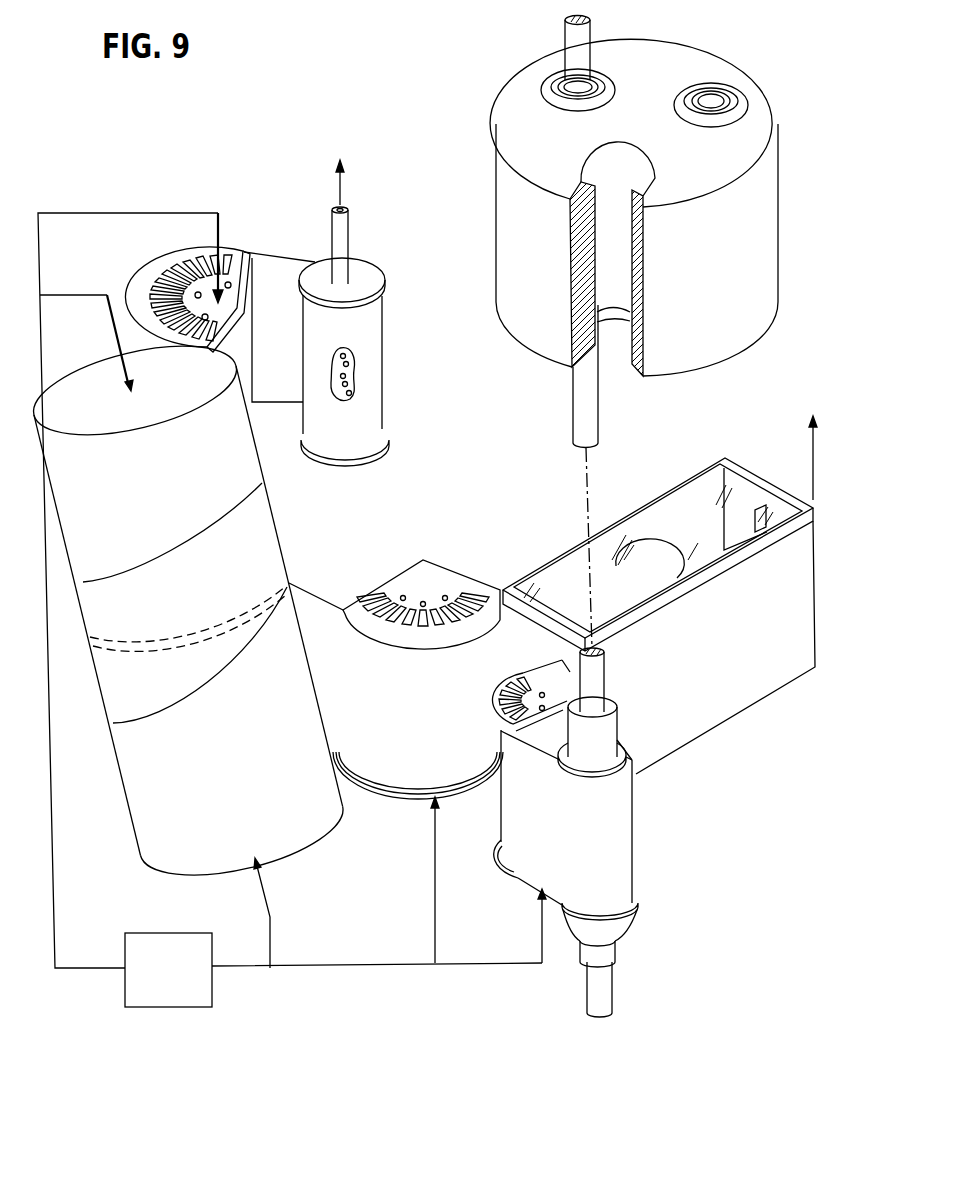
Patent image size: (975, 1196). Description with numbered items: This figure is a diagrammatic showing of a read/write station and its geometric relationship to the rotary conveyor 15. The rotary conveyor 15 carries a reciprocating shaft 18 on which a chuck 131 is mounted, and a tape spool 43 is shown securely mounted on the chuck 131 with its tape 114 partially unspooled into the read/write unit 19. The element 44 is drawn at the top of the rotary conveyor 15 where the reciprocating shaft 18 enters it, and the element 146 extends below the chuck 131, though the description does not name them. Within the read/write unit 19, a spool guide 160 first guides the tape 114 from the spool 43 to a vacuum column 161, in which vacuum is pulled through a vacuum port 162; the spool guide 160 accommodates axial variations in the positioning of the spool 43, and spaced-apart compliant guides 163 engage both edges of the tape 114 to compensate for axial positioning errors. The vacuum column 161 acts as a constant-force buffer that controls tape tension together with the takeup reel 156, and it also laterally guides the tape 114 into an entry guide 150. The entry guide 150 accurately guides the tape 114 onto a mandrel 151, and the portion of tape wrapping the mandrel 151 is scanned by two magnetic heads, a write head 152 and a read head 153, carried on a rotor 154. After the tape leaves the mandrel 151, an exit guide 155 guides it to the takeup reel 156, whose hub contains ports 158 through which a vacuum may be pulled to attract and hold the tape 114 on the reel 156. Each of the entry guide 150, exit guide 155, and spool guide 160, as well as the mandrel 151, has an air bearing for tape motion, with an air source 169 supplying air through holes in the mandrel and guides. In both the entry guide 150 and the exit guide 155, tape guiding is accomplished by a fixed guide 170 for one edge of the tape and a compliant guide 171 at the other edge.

The rotary conveyor 15 is at (498, 120).
The reciprocating shaft 18 is at (588, 36).
The read/write unit 19 is at (306, 1035).
The tape spool 43 is at (623, 750).
The bearing 44 is at (603, 87).
The tape 114 is at (315, 596).
The chuck 131 is at (640, 920).
The drive shaft 146 is at (610, 990).
The entry guide 150 is at (432, 568).
The mandrel 151 is at (100, 364).
The write head 152 is at (178, 650).
The read head 153 is at (178, 648).
The rotor 154 is at (100, 645).
The exit guide 155 is at (247, 273).
The takeup reel 156 is at (363, 266).
The ports 158 is at (350, 391).
The spool guide 160 is at (560, 700).
The vacuum column 161 is at (706, 745).
The vacuum port 162 is at (758, 510).
The compliant guides 163 is at (494, 703).
The air source 169 is at (165, 933).
The fixed guide 170 is at (378, 788).
The compliant guide 171 is at (147, 285).